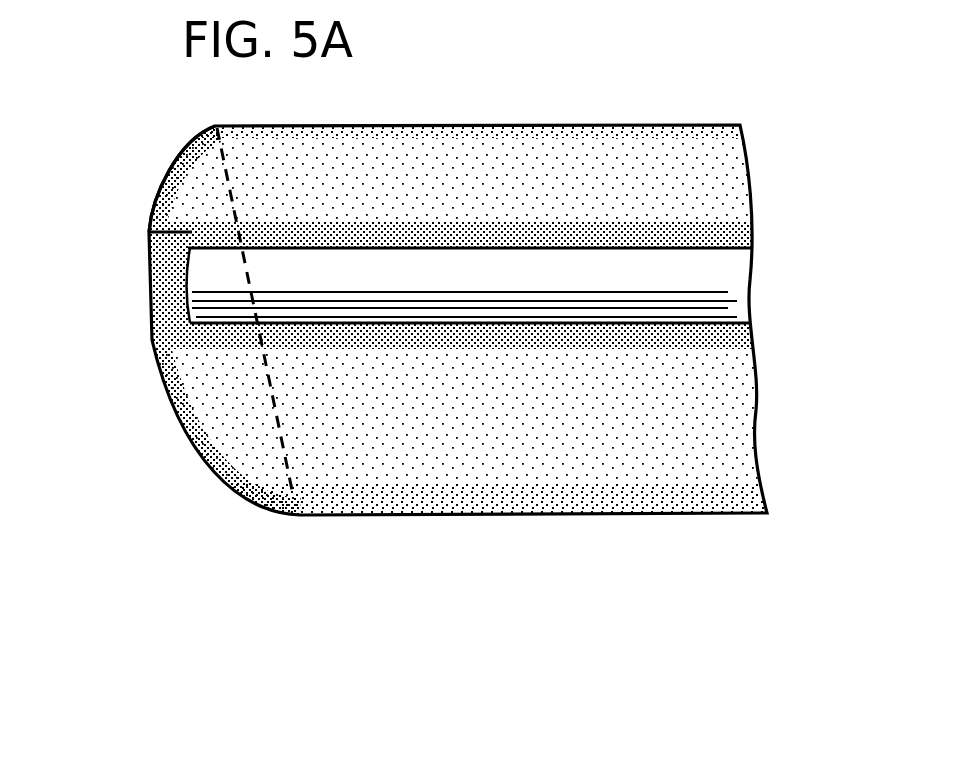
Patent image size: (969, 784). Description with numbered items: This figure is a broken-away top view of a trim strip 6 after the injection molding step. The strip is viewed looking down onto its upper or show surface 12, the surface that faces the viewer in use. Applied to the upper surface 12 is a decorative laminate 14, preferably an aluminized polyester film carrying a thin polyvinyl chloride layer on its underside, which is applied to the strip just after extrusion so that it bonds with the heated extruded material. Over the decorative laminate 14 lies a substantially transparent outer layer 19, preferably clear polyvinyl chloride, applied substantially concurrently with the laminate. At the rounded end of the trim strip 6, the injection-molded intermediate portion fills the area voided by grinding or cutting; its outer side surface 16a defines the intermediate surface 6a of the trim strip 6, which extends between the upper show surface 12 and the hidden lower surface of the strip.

The trim strip 6 is at (451, 273).
The intermediate surface 6a is at (177, 160).
The upper surface 12 is at (698, 138).
The decorative laminate 14 is at (731, 268).
The outer side surface 16a is at (148, 217).
The outer layer 19 is at (733, 306).